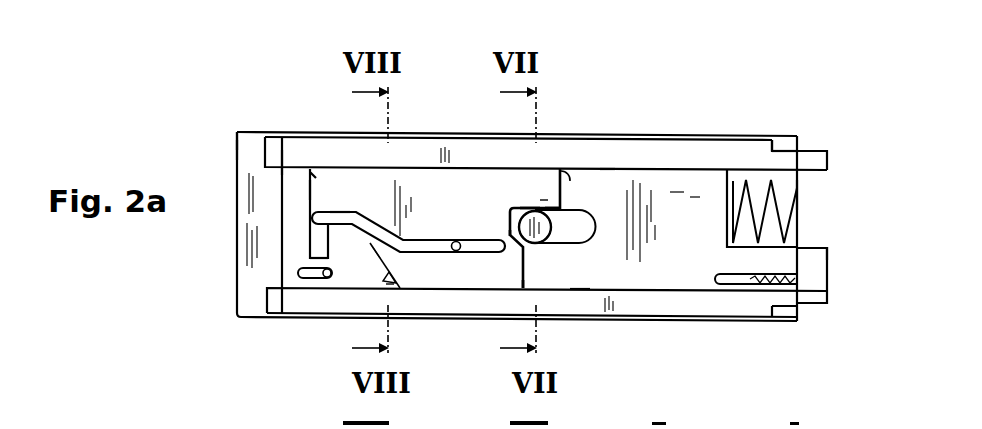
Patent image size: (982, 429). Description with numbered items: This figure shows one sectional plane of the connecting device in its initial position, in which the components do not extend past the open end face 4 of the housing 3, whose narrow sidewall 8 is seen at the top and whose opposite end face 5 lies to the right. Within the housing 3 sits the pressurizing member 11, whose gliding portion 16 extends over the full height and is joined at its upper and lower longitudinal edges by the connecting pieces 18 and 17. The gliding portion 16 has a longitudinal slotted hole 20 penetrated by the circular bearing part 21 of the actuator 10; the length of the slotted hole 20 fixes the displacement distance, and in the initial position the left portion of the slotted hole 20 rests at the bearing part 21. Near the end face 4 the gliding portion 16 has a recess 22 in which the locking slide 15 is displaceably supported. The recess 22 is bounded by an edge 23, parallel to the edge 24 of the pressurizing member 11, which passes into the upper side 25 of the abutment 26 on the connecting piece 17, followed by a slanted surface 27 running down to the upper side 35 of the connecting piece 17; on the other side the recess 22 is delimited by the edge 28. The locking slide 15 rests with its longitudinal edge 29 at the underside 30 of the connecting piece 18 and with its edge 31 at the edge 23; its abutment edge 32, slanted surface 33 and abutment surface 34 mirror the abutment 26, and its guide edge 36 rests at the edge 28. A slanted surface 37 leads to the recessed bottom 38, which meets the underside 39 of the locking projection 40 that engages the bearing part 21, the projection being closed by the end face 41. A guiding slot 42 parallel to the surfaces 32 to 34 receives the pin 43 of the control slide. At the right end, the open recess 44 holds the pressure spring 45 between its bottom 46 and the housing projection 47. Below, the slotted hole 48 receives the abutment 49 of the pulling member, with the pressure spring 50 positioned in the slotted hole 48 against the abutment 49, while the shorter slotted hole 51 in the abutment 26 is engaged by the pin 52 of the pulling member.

The housing 3 is at (641, 126).
The end face 4 is at (237, 148).
The end face 5 is at (798, 195).
The sidewall 8 is at (237, 132).
The actuator 10 is at (543, 213).
The pressurizing member 11 is at (678, 180).
The locking slide 15 is at (362, 186).
The gliding portion 16 is at (695, 197).
The connecting piece 17 is at (628, 307).
The connecting piece 18 is at (606, 168).
The slotted hole 20 is at (591, 218).
The bearing part 21 is at (527, 208).
The recess 22 is at (325, 257).
The edge 23 is at (287, 163).
The edge 24 is at (282, 202).
The upper side 25 is at (372, 273).
The abutment 26 is at (340, 283).
The slanted surface 27 is at (390, 283).
The edge 28 is at (531, 289).
The longitudinal edge 29 is at (350, 173).
The underside 30 is at (656, 176).
The edge 31 is at (310, 190).
The abutment edge 32 is at (323, 250).
The slanted surface 33 is at (378, 252).
The abutment surface 34 is at (434, 256).
The upper side 35 is at (578, 284).
The guide edge 36 is at (523, 262).
The slanted surface 37 is at (517, 240).
The bottom 38 is at (508, 208).
The underside 39 is at (528, 212).
The locking projection 40 is at (537, 200).
The end face 41 is at (566, 208).
The guiding slot 42 is at (343, 208).
The pin 43 is at (455, 242).
The open recess 44 is at (757, 150).
The pressure spring 45 is at (780, 223).
The bottom 46 is at (727, 172).
The projection 47 is at (787, 148).
The slotted hole 48 is at (720, 280).
The abutment 49 is at (768, 274).
The pressure spring 50 is at (797, 281).
The slotted hole 51 is at (298, 275).
The pin 52 is at (327, 275).